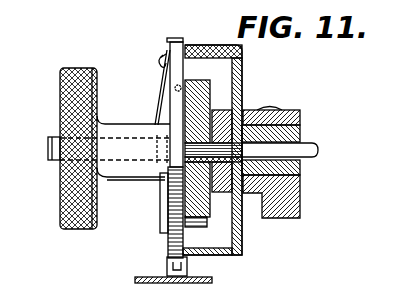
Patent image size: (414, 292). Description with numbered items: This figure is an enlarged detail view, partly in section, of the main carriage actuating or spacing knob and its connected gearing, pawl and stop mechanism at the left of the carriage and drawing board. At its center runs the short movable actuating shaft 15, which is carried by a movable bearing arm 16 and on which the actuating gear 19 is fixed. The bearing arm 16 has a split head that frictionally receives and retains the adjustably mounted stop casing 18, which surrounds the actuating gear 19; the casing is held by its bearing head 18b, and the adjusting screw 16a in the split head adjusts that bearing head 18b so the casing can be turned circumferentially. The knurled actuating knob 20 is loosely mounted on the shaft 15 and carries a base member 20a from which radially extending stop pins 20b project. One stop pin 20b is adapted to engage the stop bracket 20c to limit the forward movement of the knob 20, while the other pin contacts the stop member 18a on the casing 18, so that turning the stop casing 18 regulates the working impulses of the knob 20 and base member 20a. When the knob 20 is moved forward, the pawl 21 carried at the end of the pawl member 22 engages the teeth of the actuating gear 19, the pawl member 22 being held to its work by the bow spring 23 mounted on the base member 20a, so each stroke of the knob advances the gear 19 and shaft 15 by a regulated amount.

The actuating shaft 15 is at (316, 150).
The bearing arm 16 is at (300, 193).
The adjusting screw 16a is at (270, 109).
The stop casing 18 is at (243, 69).
The stop member 18a is at (175, 40).
The bearing head 18b is at (300, 133).
The actuating gear 19 is at (205, 208).
The actuating knob 20 is at (60, 80).
The base member 20a is at (147, 48).
The stop pin 20b is at (175, 88).
The stop bracket 20c is at (188, 268).
The pawl 21 is at (200, 236).
The pawl member 22 is at (163, 196).
The bow spring 23 is at (158, 101).